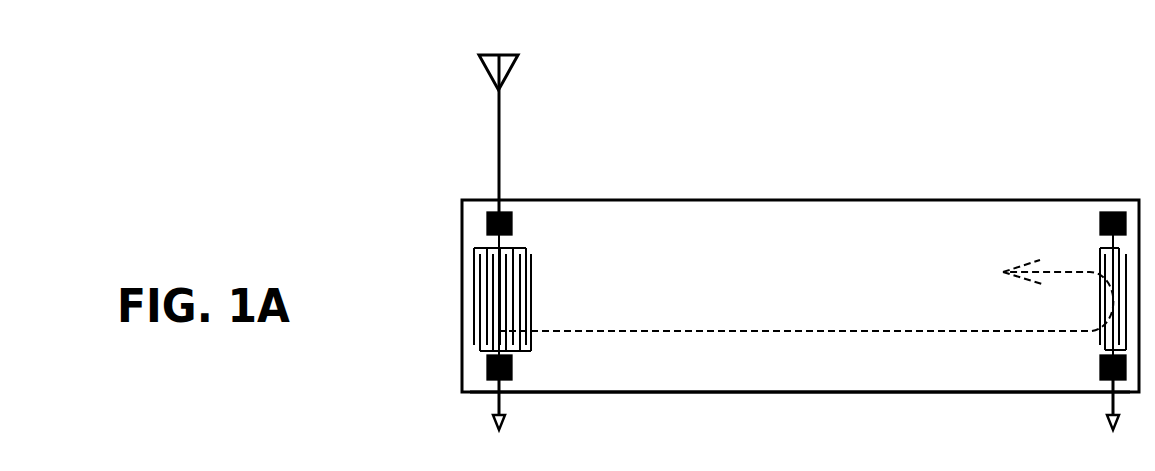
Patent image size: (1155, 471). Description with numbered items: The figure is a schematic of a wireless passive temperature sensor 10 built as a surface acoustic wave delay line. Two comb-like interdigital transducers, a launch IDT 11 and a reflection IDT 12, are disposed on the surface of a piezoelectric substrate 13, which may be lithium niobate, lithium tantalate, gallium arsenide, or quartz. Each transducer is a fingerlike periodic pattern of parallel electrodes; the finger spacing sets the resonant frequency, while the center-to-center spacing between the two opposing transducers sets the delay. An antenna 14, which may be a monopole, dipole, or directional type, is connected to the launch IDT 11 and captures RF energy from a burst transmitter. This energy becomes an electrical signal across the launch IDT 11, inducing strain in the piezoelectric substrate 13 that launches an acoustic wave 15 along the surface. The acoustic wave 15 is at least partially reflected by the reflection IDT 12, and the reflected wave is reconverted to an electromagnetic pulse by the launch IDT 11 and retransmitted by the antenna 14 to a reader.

The wireless passive temperature sensor 10 is at (936, 118).
The launch IDT 11 is at (545, 266).
The reflection IDT 12 is at (1075, 250).
The piezoelectric substrate 13 is at (843, 275).
The antenna 14 is at (502, 157).
The acoustic wave 15 is at (623, 331).